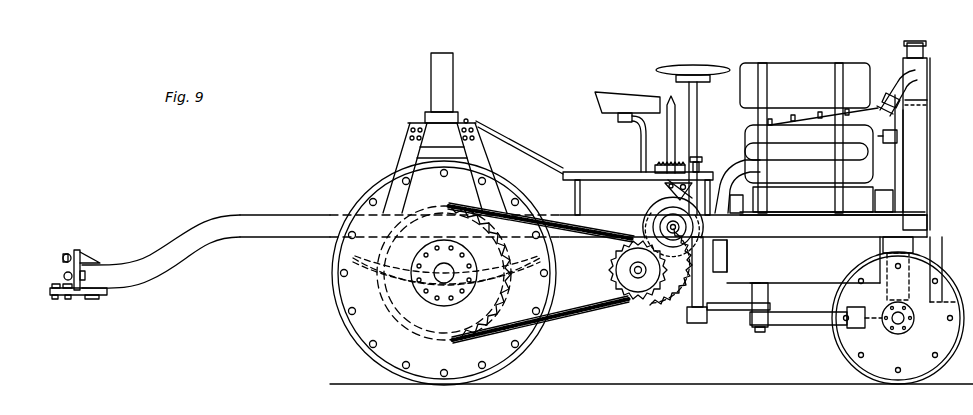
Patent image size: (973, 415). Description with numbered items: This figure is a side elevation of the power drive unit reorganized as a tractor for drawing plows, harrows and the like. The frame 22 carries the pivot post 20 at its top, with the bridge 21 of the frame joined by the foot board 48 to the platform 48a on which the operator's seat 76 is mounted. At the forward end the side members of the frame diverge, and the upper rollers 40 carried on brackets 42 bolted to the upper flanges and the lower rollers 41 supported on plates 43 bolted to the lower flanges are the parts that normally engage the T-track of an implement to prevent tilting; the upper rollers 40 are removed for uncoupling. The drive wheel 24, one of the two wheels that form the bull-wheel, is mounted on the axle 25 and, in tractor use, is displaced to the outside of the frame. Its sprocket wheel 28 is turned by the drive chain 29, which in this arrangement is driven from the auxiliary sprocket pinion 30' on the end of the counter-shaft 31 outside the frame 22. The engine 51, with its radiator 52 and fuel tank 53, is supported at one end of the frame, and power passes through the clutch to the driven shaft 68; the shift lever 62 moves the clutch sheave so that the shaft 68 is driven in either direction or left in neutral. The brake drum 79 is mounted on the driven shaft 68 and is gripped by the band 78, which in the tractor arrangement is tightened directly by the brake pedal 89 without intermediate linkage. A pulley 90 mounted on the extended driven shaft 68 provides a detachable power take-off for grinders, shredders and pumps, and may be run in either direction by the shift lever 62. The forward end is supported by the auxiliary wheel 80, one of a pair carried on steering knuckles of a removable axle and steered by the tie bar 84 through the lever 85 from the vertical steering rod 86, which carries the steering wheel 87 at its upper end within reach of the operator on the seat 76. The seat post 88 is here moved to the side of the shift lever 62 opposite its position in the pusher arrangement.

The pivot post 20 is at (453, 79).
The bridge 21 is at (484, 160).
The frame 22 is at (290, 214).
The drive wheel 24 is at (528, 349).
The axle 25 is at (444, 276).
The sprocket wheel 28 is at (508, 288).
The drive chain 29 is at (585, 316).
The auxiliary sprocket pinion 30' is at (616, 272).
The counter-shaft 31 is at (630, 268).
The roller 40 is at (67, 254).
The roller 41 is at (56, 280).
The bracket 42 is at (100, 259).
The plate 43 is at (64, 295).
The foot board 48 is at (514, 144).
The platform 48a is at (635, 183).
The engine 51 is at (820, 155).
The radiator 52 is at (912, 63).
The fuel tank 53 is at (806, 70).
The shift lever 62 is at (675, 127).
The driven shaft 68 is at (652, 223).
The seat 76 is at (606, 98).
The band 78 is at (664, 192).
The brake drum 79 is at (710, 232).
The auxiliary wheel 80 is at (848, 340).
The tie bar 84 is at (855, 306).
The lever 85 is at (782, 316).
The vertical steering rod 86 is at (698, 136).
The steering wheel 87 is at (700, 66).
The seat post 88 is at (641, 150).
The brake pedal 89 is at (700, 157).
The pulley 90 is at (680, 296).